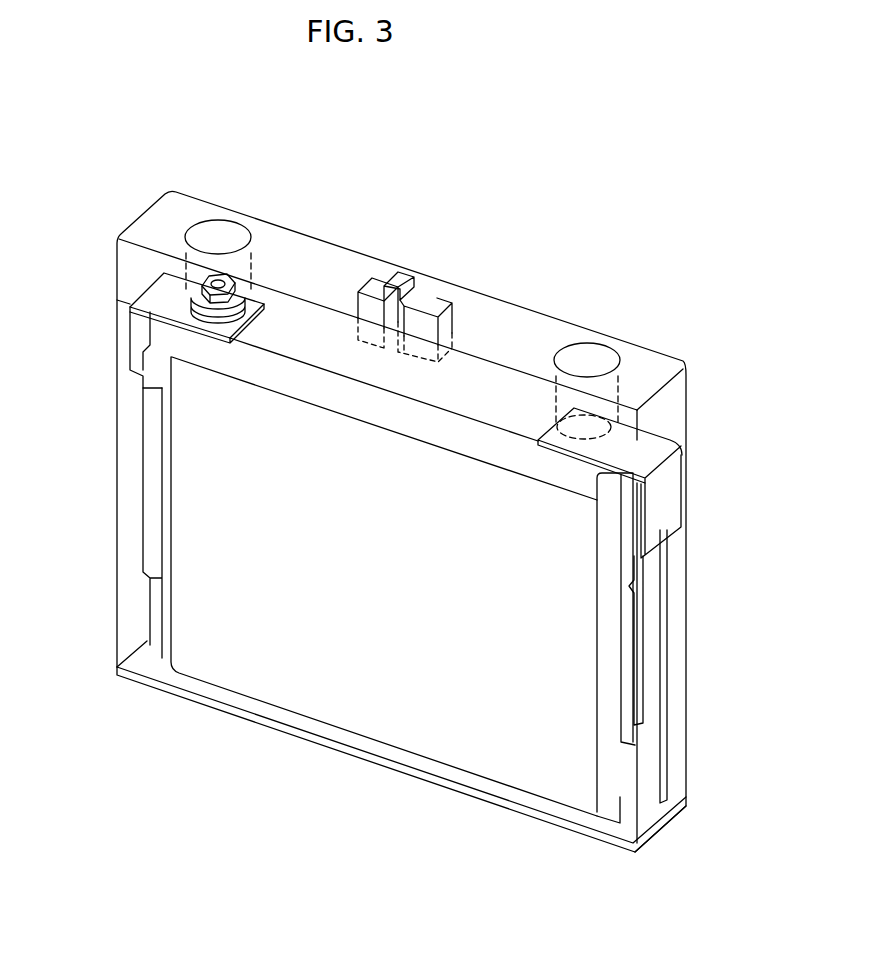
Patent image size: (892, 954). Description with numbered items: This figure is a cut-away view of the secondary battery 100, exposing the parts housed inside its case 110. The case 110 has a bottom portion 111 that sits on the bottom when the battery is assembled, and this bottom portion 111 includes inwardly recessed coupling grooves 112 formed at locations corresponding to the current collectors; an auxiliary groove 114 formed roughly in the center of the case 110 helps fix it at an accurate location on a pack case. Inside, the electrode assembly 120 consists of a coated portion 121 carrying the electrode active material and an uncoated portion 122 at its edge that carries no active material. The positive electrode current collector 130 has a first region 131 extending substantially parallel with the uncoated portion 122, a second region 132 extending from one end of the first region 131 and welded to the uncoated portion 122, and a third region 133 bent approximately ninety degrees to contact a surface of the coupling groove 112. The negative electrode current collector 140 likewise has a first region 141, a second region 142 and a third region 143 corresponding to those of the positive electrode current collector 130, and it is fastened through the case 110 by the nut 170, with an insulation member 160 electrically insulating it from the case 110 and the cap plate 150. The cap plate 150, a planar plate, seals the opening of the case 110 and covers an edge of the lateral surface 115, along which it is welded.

The secondary battery 100 is at (743, 250).
The case 110 is at (584, 303).
The bottom portion 111 is at (499, 313).
The coupling groove 112 is at (221, 222).
The auxiliary groove 114 is at (413, 284).
The lateral surface 115 is at (687, 745).
The electrode assembly 120 is at (445, 883).
The coated portion 121 is at (520, 765).
The uncoated portion 122 is at (628, 818).
The positive electrode current collector 130 is at (652, 425).
The first region 131 is at (666, 494).
The second region 132 is at (632, 637).
The third region 133 is at (676, 444).
The negative electrode current collector 140 is at (153, 279).
The first region 141 is at (142, 330).
The second region 142 is at (150, 484).
The third region 143 is at (130, 300).
The cap plate 150 is at (682, 833).
The insulation member 160 is at (180, 305).
The nut 170 is at (235, 280).